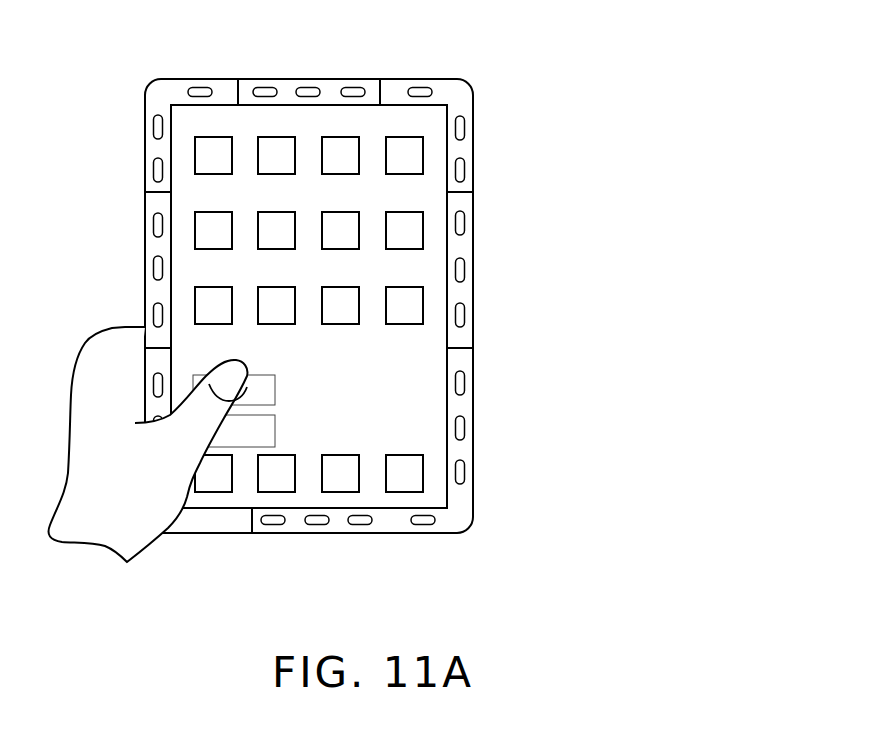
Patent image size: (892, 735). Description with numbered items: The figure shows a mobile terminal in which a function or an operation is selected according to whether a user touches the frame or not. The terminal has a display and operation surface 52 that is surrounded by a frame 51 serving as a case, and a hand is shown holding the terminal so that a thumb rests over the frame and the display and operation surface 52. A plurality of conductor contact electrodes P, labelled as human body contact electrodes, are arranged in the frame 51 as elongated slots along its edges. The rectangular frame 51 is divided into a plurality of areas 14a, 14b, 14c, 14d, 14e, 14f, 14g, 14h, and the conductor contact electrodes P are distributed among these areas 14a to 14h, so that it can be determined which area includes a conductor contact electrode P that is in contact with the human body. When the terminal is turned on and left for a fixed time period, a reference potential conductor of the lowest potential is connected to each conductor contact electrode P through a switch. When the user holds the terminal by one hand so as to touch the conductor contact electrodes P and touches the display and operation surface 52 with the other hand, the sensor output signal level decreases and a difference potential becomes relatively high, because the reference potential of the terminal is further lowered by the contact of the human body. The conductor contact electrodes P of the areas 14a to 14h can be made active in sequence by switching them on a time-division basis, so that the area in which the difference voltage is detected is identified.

The frame 51 is at (442, 49).
The area 14a is at (148, 150).
The area 14b is at (287, 85).
The area 14c is at (468, 97).
The area 14d is at (467, 292).
The area 14e is at (467, 448).
The area 14f is at (338, 527).
The area 14g is at (212, 527).
The area 14h is at (148, 253).
The conductor contact electrode P is at (462, 270).
The display and operation surface 52 is at (418, 408).